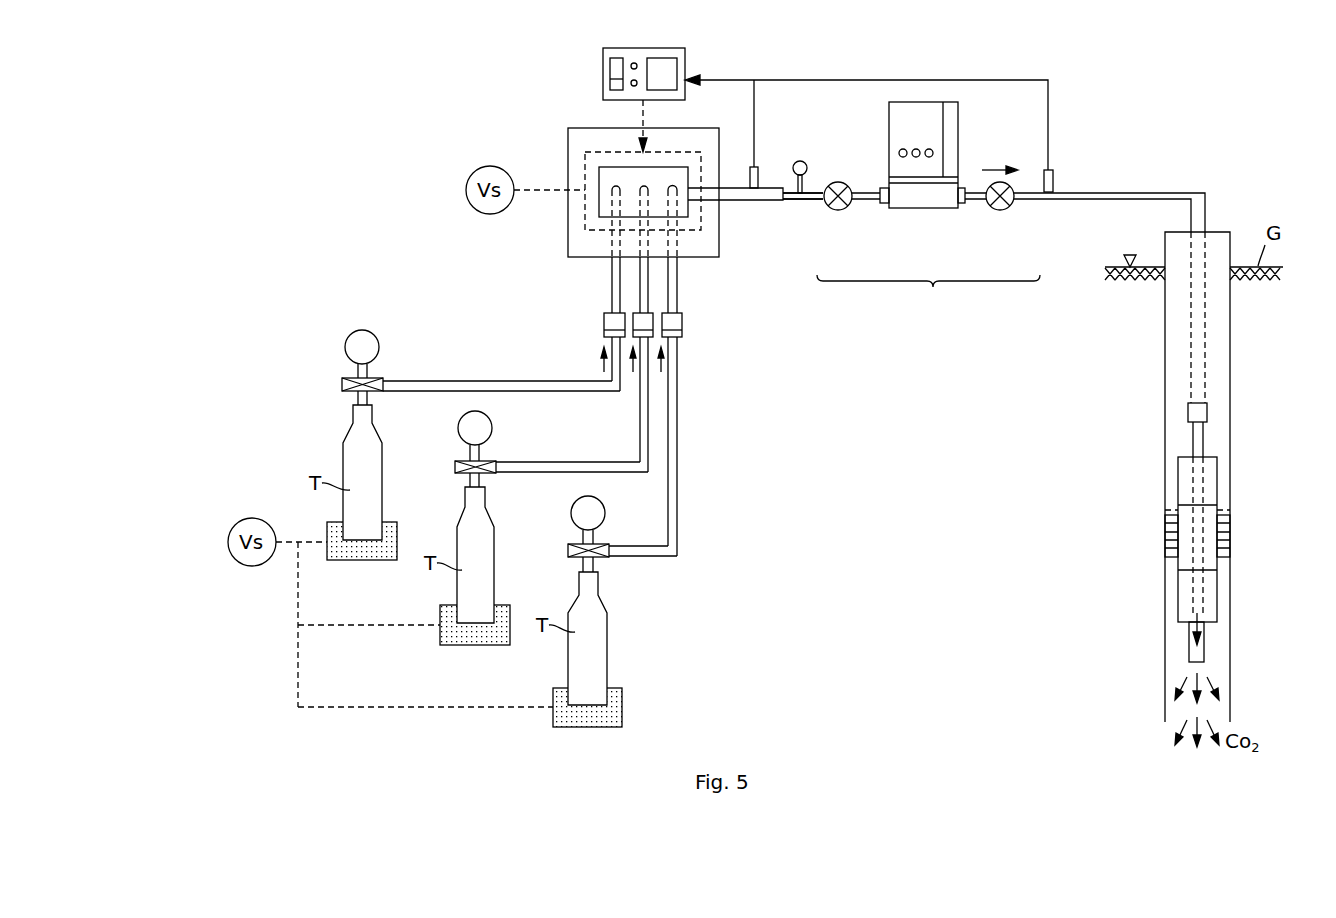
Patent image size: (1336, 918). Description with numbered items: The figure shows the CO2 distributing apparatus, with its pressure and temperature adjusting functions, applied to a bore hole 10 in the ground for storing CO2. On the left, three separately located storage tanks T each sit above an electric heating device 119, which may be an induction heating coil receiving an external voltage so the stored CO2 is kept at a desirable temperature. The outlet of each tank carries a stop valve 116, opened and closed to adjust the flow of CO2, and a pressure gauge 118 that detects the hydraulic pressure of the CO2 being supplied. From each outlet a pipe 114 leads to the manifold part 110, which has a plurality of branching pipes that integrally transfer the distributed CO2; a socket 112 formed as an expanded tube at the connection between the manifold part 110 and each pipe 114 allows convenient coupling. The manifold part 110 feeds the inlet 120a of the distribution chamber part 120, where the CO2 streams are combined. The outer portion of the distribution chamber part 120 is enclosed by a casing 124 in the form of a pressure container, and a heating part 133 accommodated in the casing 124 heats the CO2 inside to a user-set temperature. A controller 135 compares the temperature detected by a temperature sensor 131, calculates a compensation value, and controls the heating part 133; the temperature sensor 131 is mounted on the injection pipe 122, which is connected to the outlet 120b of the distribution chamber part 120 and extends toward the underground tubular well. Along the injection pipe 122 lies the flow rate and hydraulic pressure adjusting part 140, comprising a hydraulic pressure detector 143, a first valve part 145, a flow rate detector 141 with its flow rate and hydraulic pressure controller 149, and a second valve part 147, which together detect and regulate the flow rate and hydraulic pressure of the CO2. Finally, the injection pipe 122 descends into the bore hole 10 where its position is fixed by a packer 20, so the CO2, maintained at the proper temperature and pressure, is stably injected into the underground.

The bore hole 10 is at (1222, 360).
The packer 20 is at (1218, 510).
The manifold part 110 is at (673, 295).
The socket 112 is at (672, 322).
The pipes 114 is at (488, 380).
The stop valve 116 is at (342, 384).
The pressure gauge 118 is at (355, 340).
The electric heating device 119 is at (363, 561).
The distribution chamber part 120 is at (624, 172).
The inlet 120a is at (606, 193).
The outlet 120b is at (727, 193).
The injection pipe 122 is at (866, 192).
The casing 124 is at (572, 162).
The temperature sensor 131 is at (759, 167).
The heating part 133 is at (702, 151).
The controller 135 is at (683, 48).
The flow rate and hydraulic pressure adjusting part 140 is at (928, 295).
The flow rate detector 141 is at (944, 197).
The hydraulic pressure detector 143 is at (815, 201).
The valve part 145 is at (840, 208).
The valve part 147 is at (1008, 208).
The flow rate and hydraulic pressure controller 149 is at (920, 168).